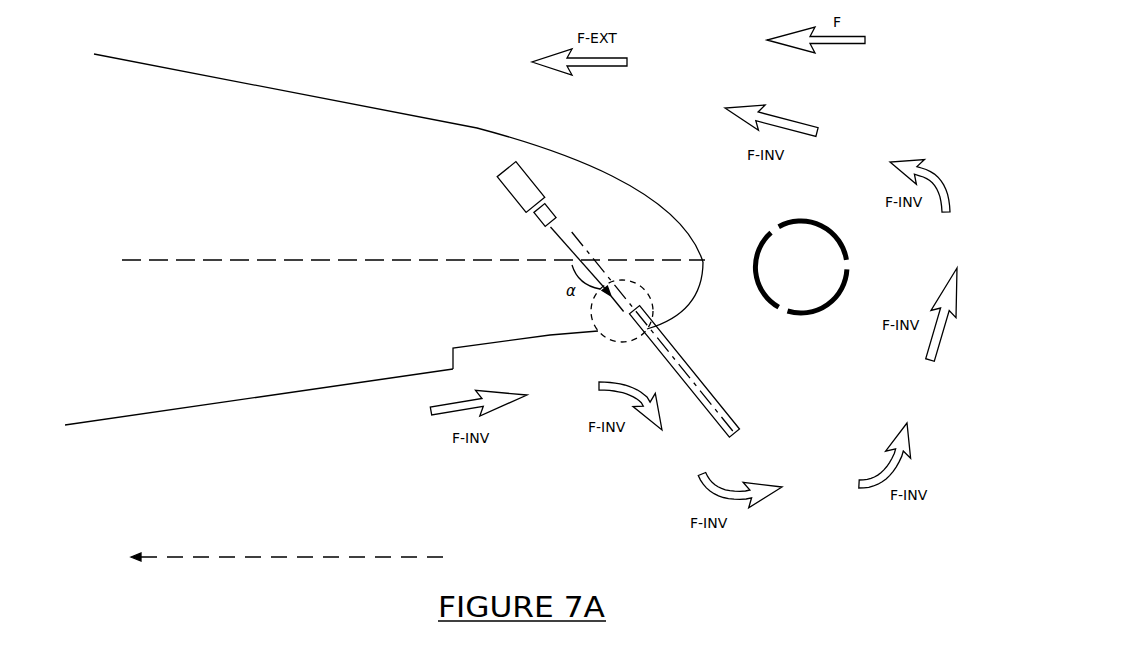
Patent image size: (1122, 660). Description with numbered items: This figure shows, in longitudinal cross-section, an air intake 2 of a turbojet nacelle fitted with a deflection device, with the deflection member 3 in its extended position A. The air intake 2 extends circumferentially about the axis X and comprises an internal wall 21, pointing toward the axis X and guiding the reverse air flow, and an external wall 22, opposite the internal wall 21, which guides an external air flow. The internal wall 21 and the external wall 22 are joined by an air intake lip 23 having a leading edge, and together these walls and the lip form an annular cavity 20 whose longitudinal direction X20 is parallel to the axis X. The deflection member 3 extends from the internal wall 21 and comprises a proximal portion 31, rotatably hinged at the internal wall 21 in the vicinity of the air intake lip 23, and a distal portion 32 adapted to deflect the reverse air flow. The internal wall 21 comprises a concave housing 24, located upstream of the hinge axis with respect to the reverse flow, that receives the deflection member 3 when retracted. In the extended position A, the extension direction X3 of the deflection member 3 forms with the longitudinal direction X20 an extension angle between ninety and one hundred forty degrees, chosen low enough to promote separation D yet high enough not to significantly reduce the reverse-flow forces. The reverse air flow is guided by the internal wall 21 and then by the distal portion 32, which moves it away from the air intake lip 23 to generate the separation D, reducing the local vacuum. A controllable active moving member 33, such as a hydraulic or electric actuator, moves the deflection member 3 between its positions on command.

The extended position A is at (216, 27).
The air intake 2 is at (461, 123).
The deflection member 3 is at (638, 302).
The annular cavity 20 is at (299, 197).
The internal wall 21 is at (410, 376).
The external wall 22 is at (477, 127).
The air intake lip 23 is at (704, 264).
The concave housing 24 is at (473, 346).
The proximal portion 31 is at (651, 307).
The distal portion 32 is at (746, 437).
The controllable active moving member 33 is at (511, 193).
The separation D is at (798, 320).
The longitudinal direction of the annular cavity X20 is at (391, 261).
The extension direction X3 is at (651, 322).
The axis X is at (280, 558).